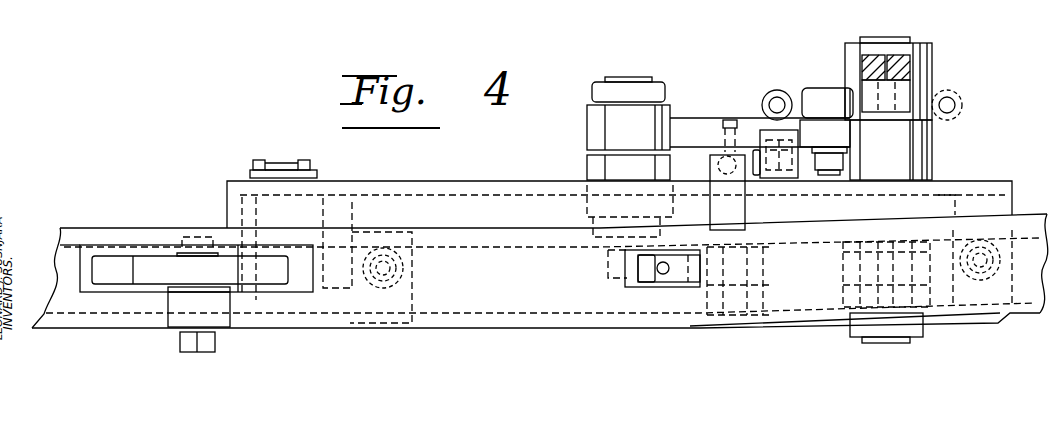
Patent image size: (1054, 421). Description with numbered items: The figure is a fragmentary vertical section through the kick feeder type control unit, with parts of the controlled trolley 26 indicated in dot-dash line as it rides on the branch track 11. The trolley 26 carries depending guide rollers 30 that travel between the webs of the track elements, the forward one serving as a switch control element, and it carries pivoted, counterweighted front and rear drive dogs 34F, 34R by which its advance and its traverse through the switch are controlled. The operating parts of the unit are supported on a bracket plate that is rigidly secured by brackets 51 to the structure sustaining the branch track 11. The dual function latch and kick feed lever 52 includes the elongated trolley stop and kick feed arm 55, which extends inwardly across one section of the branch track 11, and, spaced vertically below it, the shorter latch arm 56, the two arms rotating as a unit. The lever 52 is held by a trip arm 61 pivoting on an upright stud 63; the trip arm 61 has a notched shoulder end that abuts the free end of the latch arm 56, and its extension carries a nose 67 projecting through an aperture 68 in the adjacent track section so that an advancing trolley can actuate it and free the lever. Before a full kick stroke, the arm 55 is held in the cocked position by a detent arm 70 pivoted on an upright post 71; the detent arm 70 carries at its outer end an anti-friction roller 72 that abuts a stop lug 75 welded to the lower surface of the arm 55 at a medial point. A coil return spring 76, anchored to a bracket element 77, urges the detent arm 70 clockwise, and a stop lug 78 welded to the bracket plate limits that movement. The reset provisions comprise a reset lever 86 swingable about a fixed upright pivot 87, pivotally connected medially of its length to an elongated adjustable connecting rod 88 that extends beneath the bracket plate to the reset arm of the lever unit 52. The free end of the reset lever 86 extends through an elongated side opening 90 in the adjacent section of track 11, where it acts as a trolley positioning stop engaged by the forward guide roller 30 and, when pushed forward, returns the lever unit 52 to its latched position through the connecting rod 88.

The branch track 11 is at (140, 328).
The trolley 26 is at (996, 123).
The guide roller 30 is at (608, 278).
The front drive dog 34F is at (776, 92).
The rear drive dog 34R is at (940, 92).
The bracket 51 is at (352, 217).
The latch and kick feed lever 52 is at (868, 56).
The trolley stop and kick feed arm 55 is at (917, 48).
The latch arm 56 is at (840, 267).
The trip arm 61 is at (690, 278).
The pivot stud 63 is at (757, 318).
The nose 67 is at (648, 282).
The aperture 68 is at (630, 287).
The detent arm 70 is at (687, 128).
The upright post 71 is at (637, 76).
The anti-friction roller 72 is at (828, 100).
The stop lug 75 is at (903, 108).
The coil return spring 76 is at (745, 140).
The bracket element 77 is at (713, 180).
The stop lug 78 is at (790, 174).
The reset lever 86 is at (155, 263).
The upright pivot 87 is at (282, 164).
The connecting rod 88 is at (240, 327).
The side opening 90 is at (90, 248).